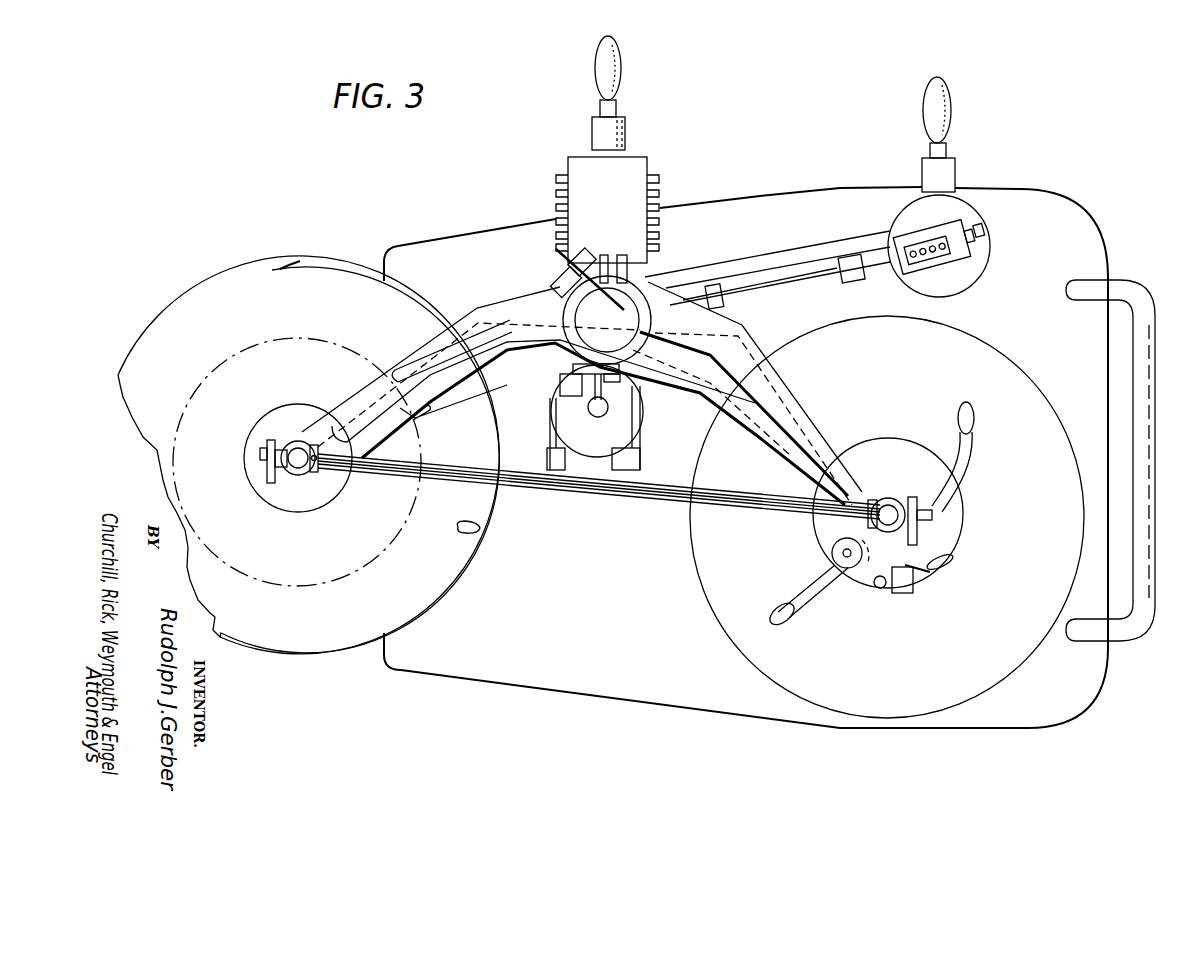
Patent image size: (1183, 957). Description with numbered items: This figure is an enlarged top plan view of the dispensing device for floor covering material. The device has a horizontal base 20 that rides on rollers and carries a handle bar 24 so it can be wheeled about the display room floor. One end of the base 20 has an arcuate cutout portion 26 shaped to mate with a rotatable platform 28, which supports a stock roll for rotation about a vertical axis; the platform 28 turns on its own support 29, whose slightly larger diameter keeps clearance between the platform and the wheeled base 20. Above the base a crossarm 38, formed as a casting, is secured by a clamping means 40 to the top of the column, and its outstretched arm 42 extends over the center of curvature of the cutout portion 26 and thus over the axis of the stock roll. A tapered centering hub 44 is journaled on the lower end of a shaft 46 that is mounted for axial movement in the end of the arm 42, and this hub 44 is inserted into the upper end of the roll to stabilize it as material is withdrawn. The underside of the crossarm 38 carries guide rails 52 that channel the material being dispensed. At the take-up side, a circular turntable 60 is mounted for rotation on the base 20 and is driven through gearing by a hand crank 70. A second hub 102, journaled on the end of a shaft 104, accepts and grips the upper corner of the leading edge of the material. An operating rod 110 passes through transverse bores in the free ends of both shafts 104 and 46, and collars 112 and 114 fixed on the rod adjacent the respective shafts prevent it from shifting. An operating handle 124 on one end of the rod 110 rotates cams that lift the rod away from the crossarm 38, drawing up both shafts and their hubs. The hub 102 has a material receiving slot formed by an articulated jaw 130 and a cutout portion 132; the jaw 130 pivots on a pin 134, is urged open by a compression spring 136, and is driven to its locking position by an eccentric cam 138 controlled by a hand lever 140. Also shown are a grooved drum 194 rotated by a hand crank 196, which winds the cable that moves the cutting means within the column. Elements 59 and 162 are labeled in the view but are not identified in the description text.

The base 20 is at (432, 240).
The handle bar 24 is at (1128, 292).
The arcuate cutout portion 26 is at (480, 527).
The platform 28 is at (330, 272).
The support 29 is at (289, 263).
The crossarm 38 is at (502, 281).
The clamping means 40 is at (635, 268).
The outstretched arm 42 is at (355, 404).
The tapered centering hub 44 is at (284, 423).
The shaft 46 is at (287, 472).
The guide rails 52 is at (462, 324).
The roll outline 59 is at (268, 338).
The turntable 60 is at (754, 662).
The hand crank 70 is at (948, 152).
The second hub 102 is at (962, 531).
The shaft 104 is at (888, 512).
The operating rod 110 is at (668, 505).
The collar 112 is at (320, 467).
The collar 114 is at (881, 487).
The operating handle 124 is at (970, 431).
The articulated jaw 130 is at (903, 586).
The cutout portion 132 is at (925, 576).
The pin 134 is at (876, 587).
The compression spring 136 is at (952, 562).
The eccentric cam 138 is at (850, 573).
The hand lever 140 is at (790, 593).
The counter 162 is at (978, 238).
The grooved drum 194 is at (560, 205).
The hand crank 196 is at (592, 73).